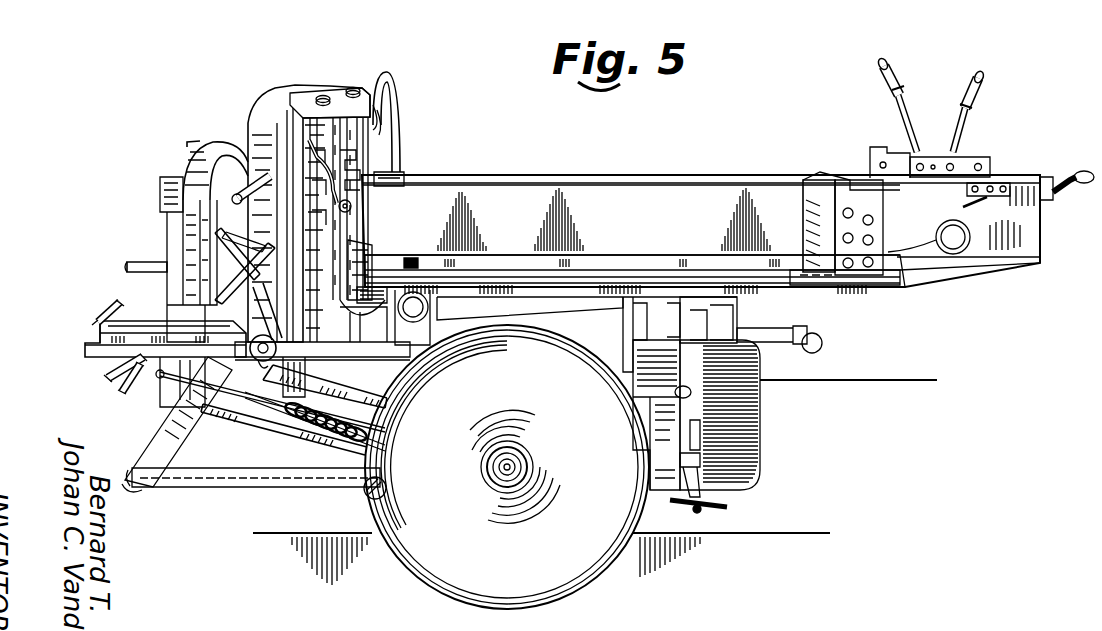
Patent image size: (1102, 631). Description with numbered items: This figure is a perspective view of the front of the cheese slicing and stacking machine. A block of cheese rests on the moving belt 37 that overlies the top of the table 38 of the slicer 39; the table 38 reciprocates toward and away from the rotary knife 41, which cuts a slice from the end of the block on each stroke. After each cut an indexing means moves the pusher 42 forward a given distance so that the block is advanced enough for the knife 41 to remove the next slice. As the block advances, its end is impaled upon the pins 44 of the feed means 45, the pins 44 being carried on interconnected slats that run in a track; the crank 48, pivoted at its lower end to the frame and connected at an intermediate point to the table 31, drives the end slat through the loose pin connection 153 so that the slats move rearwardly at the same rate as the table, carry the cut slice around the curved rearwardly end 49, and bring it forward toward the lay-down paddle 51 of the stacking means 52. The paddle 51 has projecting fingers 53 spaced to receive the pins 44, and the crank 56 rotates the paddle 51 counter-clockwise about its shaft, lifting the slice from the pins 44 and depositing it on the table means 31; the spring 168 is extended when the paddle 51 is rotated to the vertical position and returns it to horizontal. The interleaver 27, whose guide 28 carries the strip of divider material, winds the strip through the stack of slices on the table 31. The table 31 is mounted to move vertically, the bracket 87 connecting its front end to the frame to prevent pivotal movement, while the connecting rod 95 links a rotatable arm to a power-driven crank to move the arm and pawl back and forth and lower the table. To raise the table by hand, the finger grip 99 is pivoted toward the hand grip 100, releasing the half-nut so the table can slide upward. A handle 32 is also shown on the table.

The interleaver 27 is at (247, 125).
The guide 28 is at (163, 208).
The table means 31 is at (86, 361).
The table handle 32 is at (115, 315).
The moving belt 37 is at (638, 264).
The table of slicer 38 is at (800, 274).
The slicer 39 is at (546, 180).
The rotary knife 41 is at (374, 131).
The pusher 42 is at (816, 187).
The pins 44 is at (395, 152).
The feed means 45 is at (346, 86).
The crank 48 is at (372, 248).
The curved rearwardly end 49 is at (368, 78).
The lay-down paddle 51 is at (233, 226).
The stacking means 52 is at (236, 278).
The projecting fingers 53 is at (215, 257).
The crank 56 is at (315, 382).
The bracket 87 is at (223, 410).
The connecting rod 95 is at (320, 427).
The finger grip 99 is at (121, 396).
The hand grip 100 is at (108, 377).
The loose pin connection 153 is at (355, 207).
The spring 168 is at (332, 407).